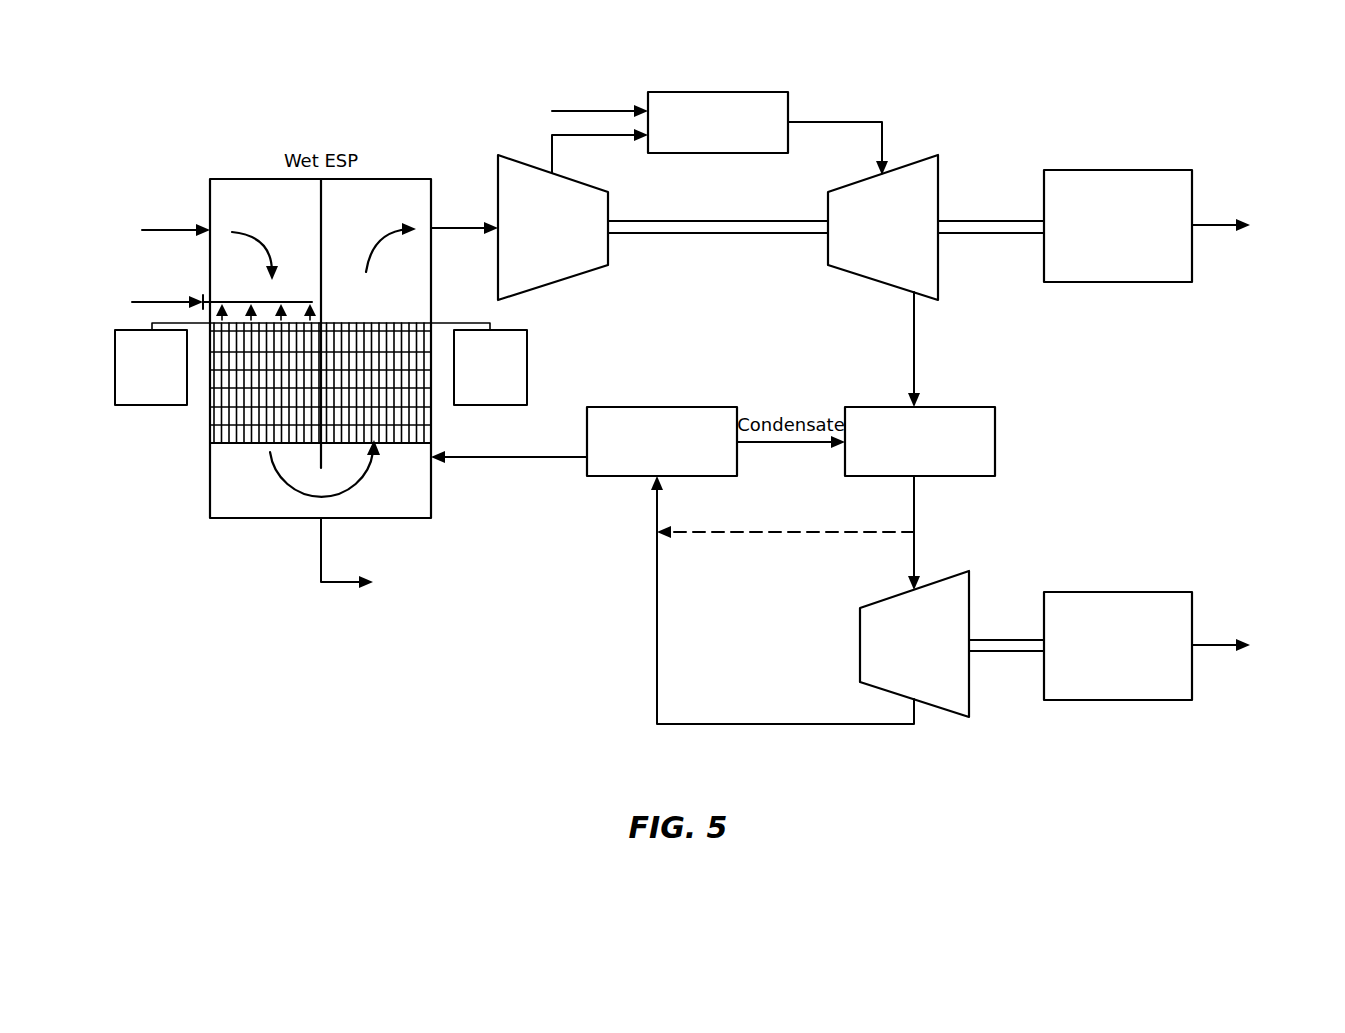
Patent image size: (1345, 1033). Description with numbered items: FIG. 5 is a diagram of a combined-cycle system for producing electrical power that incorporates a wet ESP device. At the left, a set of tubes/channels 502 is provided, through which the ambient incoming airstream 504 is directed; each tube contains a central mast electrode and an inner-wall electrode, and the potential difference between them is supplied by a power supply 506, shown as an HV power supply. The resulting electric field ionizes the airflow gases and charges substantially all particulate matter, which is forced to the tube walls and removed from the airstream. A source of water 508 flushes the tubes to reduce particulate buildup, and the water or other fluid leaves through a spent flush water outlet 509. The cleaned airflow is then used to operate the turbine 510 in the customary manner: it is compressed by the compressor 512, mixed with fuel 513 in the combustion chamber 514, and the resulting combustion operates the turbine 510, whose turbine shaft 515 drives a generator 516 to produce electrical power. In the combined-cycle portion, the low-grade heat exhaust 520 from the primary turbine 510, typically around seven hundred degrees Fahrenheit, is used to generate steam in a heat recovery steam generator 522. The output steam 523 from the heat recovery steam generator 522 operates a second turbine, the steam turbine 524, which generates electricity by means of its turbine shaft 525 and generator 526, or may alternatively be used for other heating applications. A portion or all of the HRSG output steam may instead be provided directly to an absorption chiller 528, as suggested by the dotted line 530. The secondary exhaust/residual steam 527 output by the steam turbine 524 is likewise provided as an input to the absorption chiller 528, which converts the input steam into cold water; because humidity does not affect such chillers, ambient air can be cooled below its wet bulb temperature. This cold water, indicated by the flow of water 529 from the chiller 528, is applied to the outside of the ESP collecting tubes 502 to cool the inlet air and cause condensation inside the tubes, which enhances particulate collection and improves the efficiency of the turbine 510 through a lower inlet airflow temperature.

The set of tubes/channels 502 is at (320, 383).
The ambient incoming airstream 504 is at (161, 230).
The power supply 506 is at (150, 405).
The source of water 508 is at (142, 302).
The spent flush water outlet 509 is at (346, 585).
The turbine 510 is at (890, 165).
The compressor 512 is at (554, 282).
The fuel 513 is at (581, 111).
The combustion chamber 514 is at (706, 92).
The turbine shaft 515 is at (990, 220).
The generator 516 is at (1103, 170).
The low-grade heat exhaust 520 is at (914, 368).
The heat recovery steam generator 522 is at (905, 407).
The output steam 523 is at (914, 532).
The steam turbine 524 is at (930, 707).
The turbine shaft 525 is at (993, 638).
The generator 526 is at (1103, 592).
The secondary exhaust/residual steam 527 is at (782, 724).
The absorption chiller 528 is at (647, 407).
The flow of water 529 is at (517, 457).
The dotted line 530 is at (776, 532).